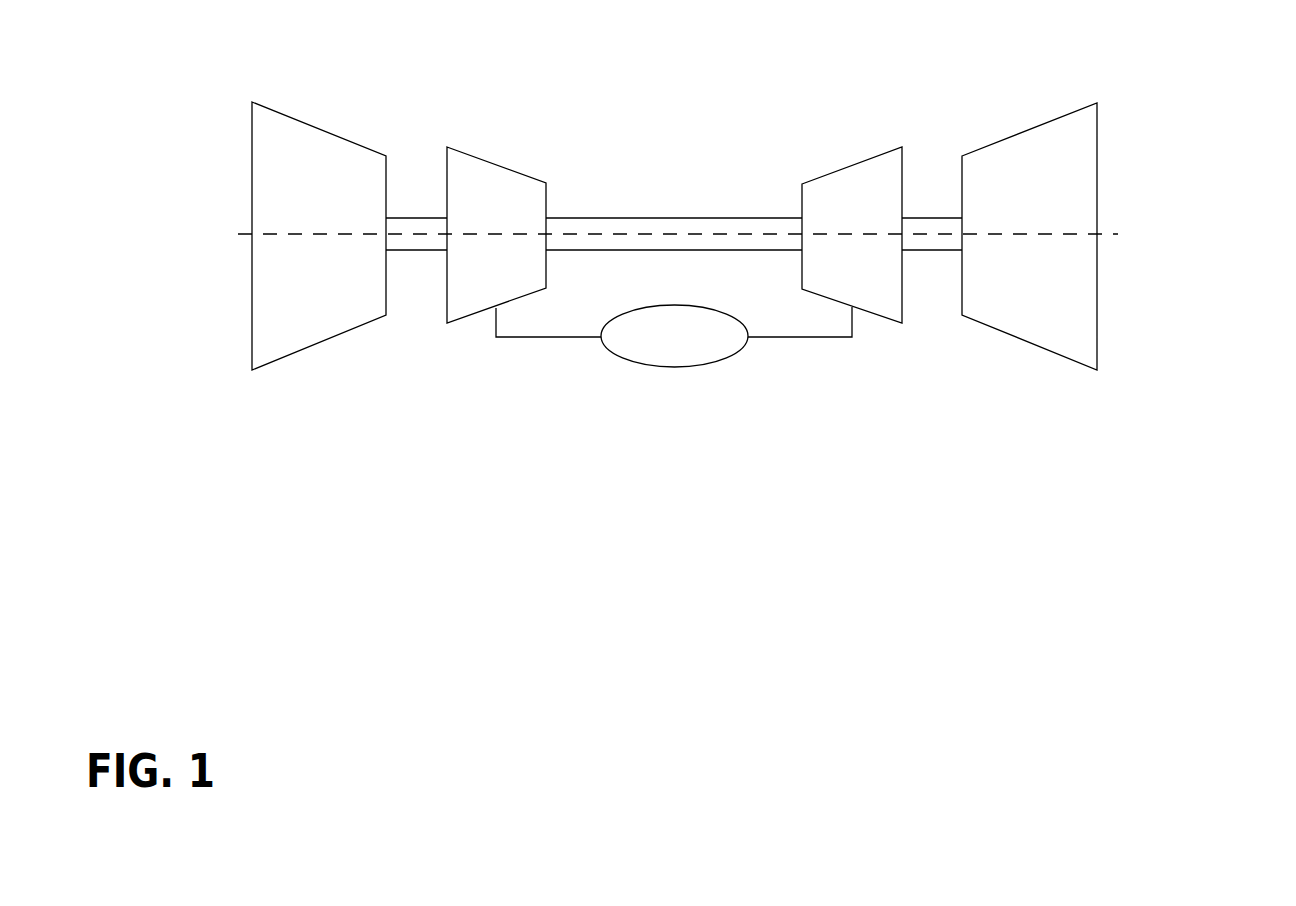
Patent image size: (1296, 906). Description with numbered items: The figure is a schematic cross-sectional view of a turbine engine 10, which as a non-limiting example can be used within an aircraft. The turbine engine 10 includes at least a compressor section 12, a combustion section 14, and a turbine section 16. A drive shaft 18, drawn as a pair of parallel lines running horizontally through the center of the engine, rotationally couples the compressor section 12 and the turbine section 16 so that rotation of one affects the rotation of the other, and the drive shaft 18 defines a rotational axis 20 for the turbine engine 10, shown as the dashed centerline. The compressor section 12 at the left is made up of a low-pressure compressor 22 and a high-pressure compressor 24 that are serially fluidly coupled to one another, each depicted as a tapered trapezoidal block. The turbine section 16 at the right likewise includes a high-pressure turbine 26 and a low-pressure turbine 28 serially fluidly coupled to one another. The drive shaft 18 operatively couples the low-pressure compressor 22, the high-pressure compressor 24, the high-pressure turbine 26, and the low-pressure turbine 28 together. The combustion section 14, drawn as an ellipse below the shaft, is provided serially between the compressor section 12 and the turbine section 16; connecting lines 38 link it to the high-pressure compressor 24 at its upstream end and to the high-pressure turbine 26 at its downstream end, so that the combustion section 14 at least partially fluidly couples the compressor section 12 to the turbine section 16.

The turbine engine 10 is at (1285, 114).
The compressor section 12 is at (406, 200).
The combustion section 14 is at (637, 363).
The turbine section 16 is at (985, 201).
The drive shaft 18 is at (675, 218).
The rotational axis 20 is at (1103, 233).
The low-pressure compressor 22 is at (355, 142).
The high-pressure compressor 24 is at (510, 170).
The high-pressure turbine 26 is at (902, 177).
The low-pressure turbine 28 is at (1098, 152).
The flow path 38 is at (803, 338).